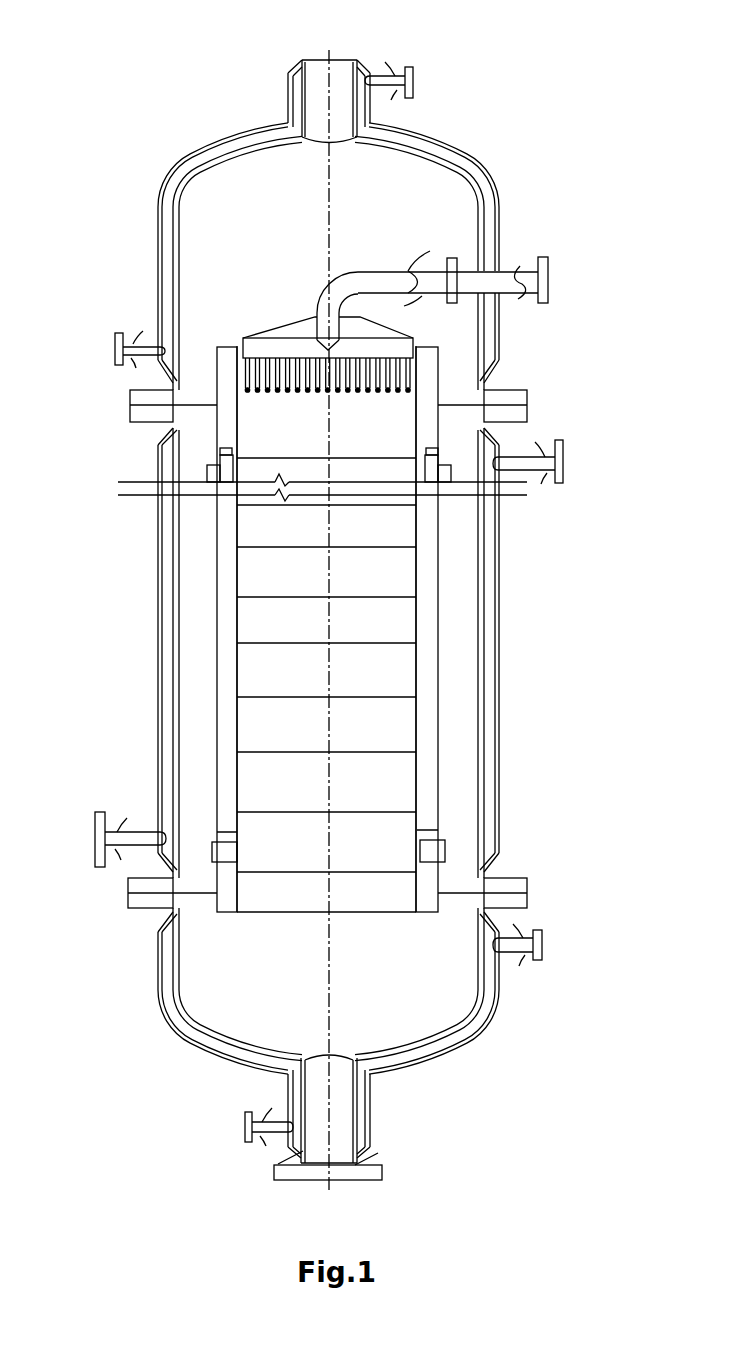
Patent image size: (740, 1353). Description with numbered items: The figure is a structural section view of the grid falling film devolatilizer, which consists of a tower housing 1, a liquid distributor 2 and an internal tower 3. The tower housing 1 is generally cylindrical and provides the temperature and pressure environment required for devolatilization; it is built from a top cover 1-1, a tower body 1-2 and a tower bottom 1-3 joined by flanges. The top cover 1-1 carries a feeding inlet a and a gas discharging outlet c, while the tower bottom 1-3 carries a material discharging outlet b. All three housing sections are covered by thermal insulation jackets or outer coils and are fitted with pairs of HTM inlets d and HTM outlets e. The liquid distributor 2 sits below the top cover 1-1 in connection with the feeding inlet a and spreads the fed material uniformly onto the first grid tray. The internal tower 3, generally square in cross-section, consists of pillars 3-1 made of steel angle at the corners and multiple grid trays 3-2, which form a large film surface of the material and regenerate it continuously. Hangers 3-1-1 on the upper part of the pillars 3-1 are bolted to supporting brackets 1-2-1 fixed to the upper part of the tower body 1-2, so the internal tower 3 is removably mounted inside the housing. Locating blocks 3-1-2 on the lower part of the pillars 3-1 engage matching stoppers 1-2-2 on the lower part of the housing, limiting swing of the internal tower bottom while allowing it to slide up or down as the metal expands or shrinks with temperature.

The tower housing 1 is at (480, 618).
The top cover 1-1 is at (173, 248).
The tower body 1-2 is at (177, 765).
The tower bottom 1-3 is at (158, 933).
The supporting brackets 1-2-1 is at (207, 482).
The stoppers 1-2-2 is at (445, 850).
The liquid distributor 2 is at (272, 343).
The internal tower 3 is at (410, 470).
The pillars 3-1 is at (439, 765).
The grid trays 3-2 is at (385, 752).
The hangers 3-1-1 is at (213, 455).
The locating blocks 3-1-2 is at (443, 830).
The feeding inlet a is at (468, 278).
The material discharging outlet b is at (328, 1134).
The gas discharging outlet c is at (329, 90).
The HTM inlet d is at (174, 738).
The HTM outlet e is at (478, 514).